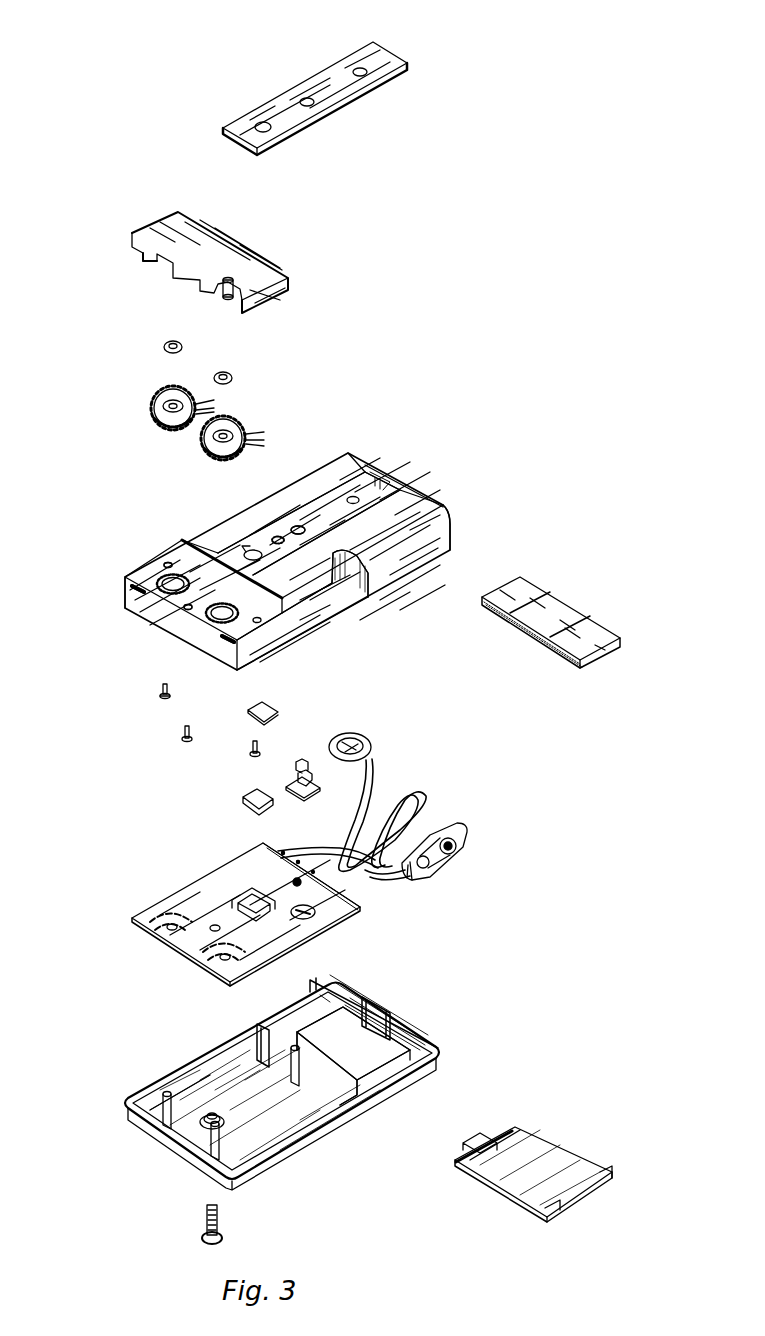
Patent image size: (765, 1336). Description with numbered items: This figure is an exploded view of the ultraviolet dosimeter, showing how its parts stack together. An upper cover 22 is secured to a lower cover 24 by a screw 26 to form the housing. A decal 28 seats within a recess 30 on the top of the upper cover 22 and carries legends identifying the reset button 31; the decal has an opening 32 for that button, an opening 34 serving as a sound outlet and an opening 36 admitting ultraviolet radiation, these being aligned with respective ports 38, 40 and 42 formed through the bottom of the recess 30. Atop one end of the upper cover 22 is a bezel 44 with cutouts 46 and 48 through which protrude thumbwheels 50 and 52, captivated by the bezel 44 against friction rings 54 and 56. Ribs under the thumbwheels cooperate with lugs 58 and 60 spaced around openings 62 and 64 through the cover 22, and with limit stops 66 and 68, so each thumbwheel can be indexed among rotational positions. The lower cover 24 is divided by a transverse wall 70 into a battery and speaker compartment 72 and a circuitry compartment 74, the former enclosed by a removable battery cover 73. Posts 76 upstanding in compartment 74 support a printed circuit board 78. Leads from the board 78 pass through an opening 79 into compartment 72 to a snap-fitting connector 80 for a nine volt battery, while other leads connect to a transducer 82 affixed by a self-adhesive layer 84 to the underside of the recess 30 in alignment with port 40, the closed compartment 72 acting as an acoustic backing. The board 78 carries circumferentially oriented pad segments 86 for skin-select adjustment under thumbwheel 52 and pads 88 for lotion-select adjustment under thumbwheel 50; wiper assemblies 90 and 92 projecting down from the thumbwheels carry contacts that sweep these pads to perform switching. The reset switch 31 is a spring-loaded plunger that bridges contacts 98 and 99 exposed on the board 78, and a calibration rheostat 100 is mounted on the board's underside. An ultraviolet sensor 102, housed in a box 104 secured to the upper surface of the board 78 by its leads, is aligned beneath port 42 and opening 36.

The upper cover 22 is at (445, 542).
The lower cover 24 is at (292, 1168).
The screw 26 is at (220, 1220).
The decal 28 is at (400, 70).
The recess 30 is at (360, 478).
The reset button 31 is at (305, 766).
The opening 32 is at (309, 106).
The opening 34 is at (357, 68).
The opening 36 is at (258, 124).
The port 38 is at (296, 526).
The port 40 is at (395, 505).
The port 42 is at (248, 552).
The bezel 44 is at (245, 258).
The cutout 46 is at (160, 264).
The cutout 48 is at (222, 294).
The thumbwheel 50 is at (152, 418).
The thumbwheel 52 is at (210, 455).
The friction ring 54 is at (164, 350).
The friction ring 56 is at (232, 378).
The lugs 58 is at (160, 600).
The lugs 60 is at (212, 640).
The opening 62 is at (173, 575).
The opening 64 is at (270, 640).
The limit stops 66 is at (164, 566).
The limit stops 68 is at (215, 618).
The transverse wall 70 is at (345, 1112).
The battery and speaker compartment 72 is at (418, 1042).
The battery cover 73 is at (577, 1200).
The circuitry compartment 74 is at (195, 1072).
The posts 76 is at (290, 1060).
The printed circuit board 78 is at (355, 907).
The opening 79 is at (348, 578).
The snap-fitting connector 80 is at (466, 830).
The transducer 82 is at (372, 752).
The self-adhesive layer 84 is at (593, 620).
The pad segments 86 is at (210, 965).
The pads 88 is at (158, 930).
The wiper assembly 90 is at (232, 407).
The wiper assembly 92 is at (280, 440).
The contact 98 is at (345, 886).
The contact 99 is at (268, 851).
The calibration rheostat 100 is at (310, 920).
The sensor 102 is at (218, 702).
The box 104 is at (257, 918).